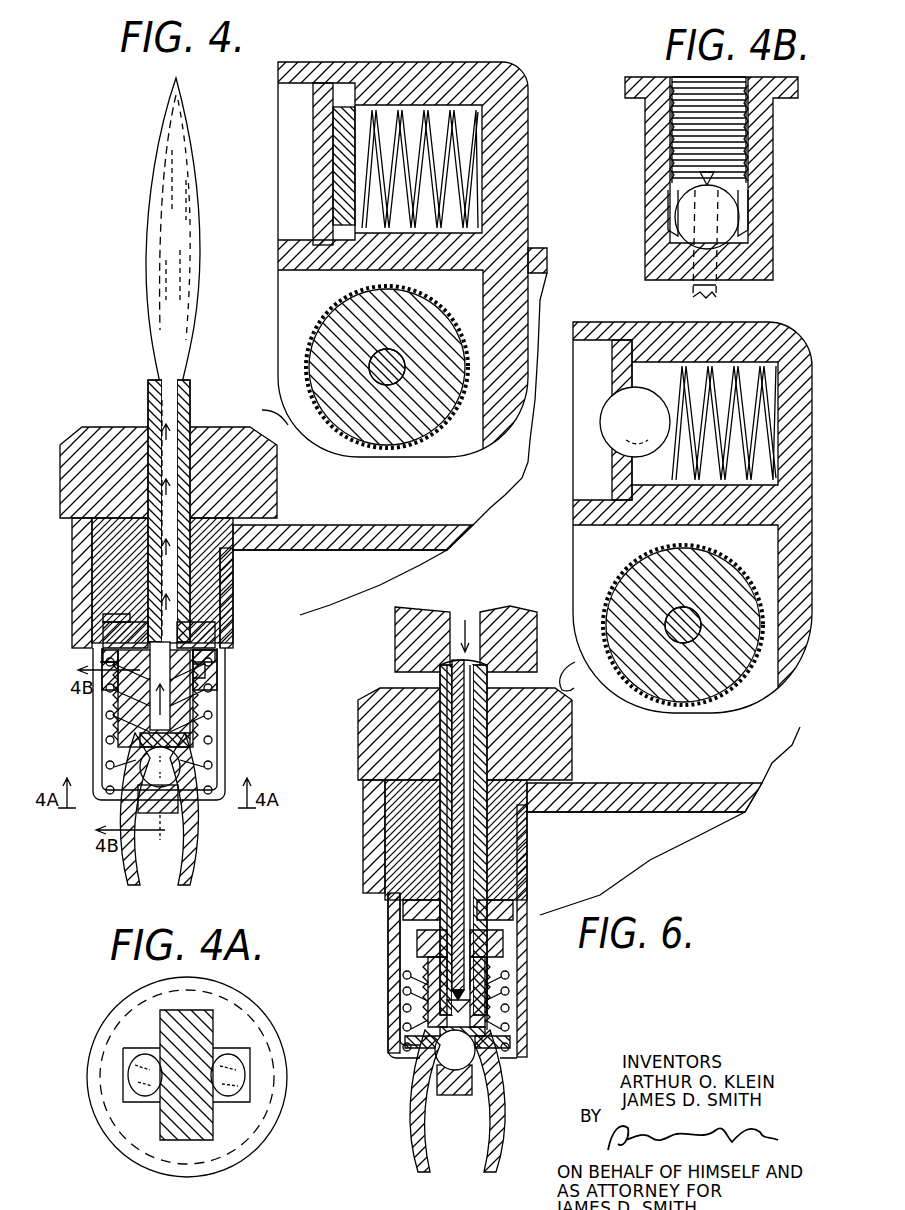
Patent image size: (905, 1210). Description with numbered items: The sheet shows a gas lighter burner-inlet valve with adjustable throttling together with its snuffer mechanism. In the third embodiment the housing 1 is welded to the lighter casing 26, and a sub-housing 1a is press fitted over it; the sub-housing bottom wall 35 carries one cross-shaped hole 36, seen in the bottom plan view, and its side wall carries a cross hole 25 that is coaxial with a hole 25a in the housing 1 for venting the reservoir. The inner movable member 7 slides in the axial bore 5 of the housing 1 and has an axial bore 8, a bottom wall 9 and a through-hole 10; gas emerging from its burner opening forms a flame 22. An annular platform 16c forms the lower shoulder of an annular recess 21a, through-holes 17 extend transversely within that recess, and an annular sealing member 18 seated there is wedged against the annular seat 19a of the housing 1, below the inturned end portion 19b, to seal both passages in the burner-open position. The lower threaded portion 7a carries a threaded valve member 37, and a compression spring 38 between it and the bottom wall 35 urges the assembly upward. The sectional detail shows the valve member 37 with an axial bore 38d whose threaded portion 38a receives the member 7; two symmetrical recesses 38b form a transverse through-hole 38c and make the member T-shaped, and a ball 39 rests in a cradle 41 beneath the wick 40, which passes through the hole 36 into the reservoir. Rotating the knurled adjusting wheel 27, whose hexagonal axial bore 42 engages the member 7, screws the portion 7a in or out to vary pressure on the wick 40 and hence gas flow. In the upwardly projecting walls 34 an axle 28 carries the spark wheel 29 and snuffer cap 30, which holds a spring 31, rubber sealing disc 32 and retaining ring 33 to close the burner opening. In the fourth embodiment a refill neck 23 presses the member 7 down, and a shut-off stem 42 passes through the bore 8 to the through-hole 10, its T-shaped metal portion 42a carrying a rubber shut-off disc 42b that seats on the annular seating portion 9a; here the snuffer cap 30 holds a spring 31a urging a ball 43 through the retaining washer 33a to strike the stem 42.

In FIG. 4, the housing 1 is at (234, 550).
In FIG. 6, the housing 1 is at (529, 812).
In FIG. 4, the sub-housing 1a is at (222, 584).
In FIG. 6, the sub-housing 1a is at (526, 852).
In FIG. 4, the axial bore 5 is at (190, 536).
In FIG. 6, the axial bore 5 is at (456, 840).
In FIG. 4, the inner movable member 7 is at (183, 391).
In FIG. 6, the inner movable member 7 is at (488, 756).
In FIG. 4, the lower threaded portion 7a is at (193, 706).
In FIG. 6, the lower threaded portion 7a is at (500, 960).
In FIG. 4, the axial bore 8 is at (148, 400).
In FIG. 6, the axial bore 8 is at (454, 686).
In FIG. 4, the bottom wall 9 is at (160, 686).
In FIG. 6, the annular seating portion 9a is at (470, 1028).
In FIG. 4, the through-hole 10 is at (190, 742).
In FIG. 6, the through-hole 10 is at (415, 1046).
In FIG. 4, the annular platform 16c is at (205, 671).
In FIG. 4, the through-holes 17 is at (118, 703).
In FIG. 6, the through-holes 17 is at (470, 930).
In FIG. 4, the annular sealing member 18 is at (220, 633).
In FIG. 6, the annular sealing member 18 is at (500, 906).
In FIG. 4, the annular seat 19a is at (208, 626).
In FIG. 4, the inturned annular end portion 19b is at (216, 652).
In FIG. 4, the annular recess 21a is at (100, 657).
In FIG. 4, the flame 22 is at (180, 148).
In FIG. 6, the neck 23 is at (536, 620).
In FIG. 4, the cross hole 25 is at (103, 638).
In FIG. 4, the hole 25a is at (103, 618).
In FIG. 4, the lighter casing 26 is at (72, 560).
In FIG. 6, the lighter casing 26 is at (363, 812).
In FIG. 4, the adjusting wheel 27 is at (62, 446).
In FIG. 6, the adjusting wheel 27 is at (358, 728).
In FIG. 4, the axle 28 is at (391, 354).
In FIG. 6, the axle 28 is at (683, 608).
In FIG. 4, the spark wheel 29 is at (320, 344).
In FIG. 6, the spark wheel 29 is at (626, 568).
In FIG. 4, the snuffer cap 30 is at (526, 196).
In FIG. 6, the snuffer cap 30 is at (784, 350).
In FIG. 4, the spring 31 is at (386, 120).
In FIG. 6, the spring 31a is at (692, 380).
In FIG. 4, the rubber sealing disc 32 is at (333, 175).
In FIG. 4, the retaining ring 33 is at (313, 98).
In FIG. 6, the retaining washer 33a is at (613, 386).
In FIG. 4, the upwardly projecting walls 34 is at (276, 418).
In FIG. 6, the upwardly projecting walls 34 is at (578, 674).
In FIG. 4, the bottom wall 35 is at (93, 792).
In FIG. 4A, the bottom wall 35 is at (242, 1022).
In FIG. 4, the cross-shaped hole 36 is at (180, 806).
In FIG. 4A, the cross-shaped hole 36 is at (246, 1078).
In FIG. 4, the threaded valve member 37 is at (102, 738).
In FIG. 4A, the threaded valve member 37 is at (162, 1112).
In FIG. 4B, the threaded valve member 37 is at (774, 170).
In FIG. 6, the threaded valve member 37 is at (490, 1005).
In FIG. 4, the compression spring 38 is at (212, 758).
In FIG. 6, the compression spring 38 is at (403, 976).
In FIG. 4B, the threaded portion 38a is at (746, 140).
In FIG. 4B, the symmetrical recesses 38b is at (748, 216).
In FIG. 4B, the transverse through-hole 38c is at (668, 200).
In FIG. 4B, the axial bore 38d is at (690, 92).
In FIG. 4, the ball 39 is at (180, 774).
In FIG. 4B, the ball 39 is at (730, 222).
In FIG. 6, the ball 39 is at (440, 1062).
In FIG. 4, the wick 40 is at (180, 847).
In FIG. 4A, the wick 40 is at (128, 1068).
In FIG. 4B, the wick 40 is at (700, 173).
In FIG. 6, the wick 40 is at (492, 1118).
In FIG. 4, the cradle 41 is at (151, 835).
In FIG. 4B, the cradle 41 is at (722, 262).
In FIG. 4, the shut-off stem 42 is at (184, 440).
In FIG. 6, the shut-off stem 42 is at (470, 738).
In FIG. 6, the T-shaped metal portion 42a is at (470, 998).
In FIG. 6, the rubber shut-off disc 42b is at (446, 1010).
In FIG. 6, the ball 43 is at (600, 421).